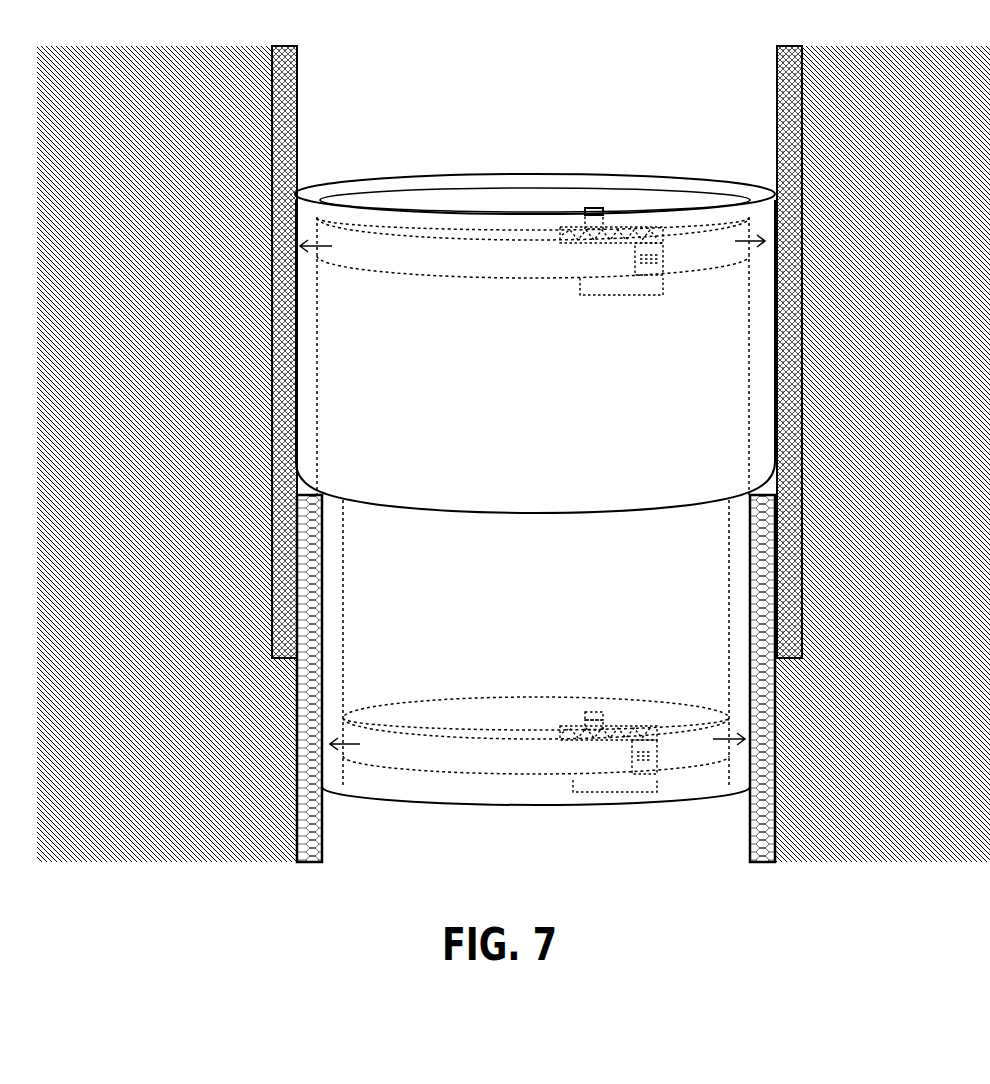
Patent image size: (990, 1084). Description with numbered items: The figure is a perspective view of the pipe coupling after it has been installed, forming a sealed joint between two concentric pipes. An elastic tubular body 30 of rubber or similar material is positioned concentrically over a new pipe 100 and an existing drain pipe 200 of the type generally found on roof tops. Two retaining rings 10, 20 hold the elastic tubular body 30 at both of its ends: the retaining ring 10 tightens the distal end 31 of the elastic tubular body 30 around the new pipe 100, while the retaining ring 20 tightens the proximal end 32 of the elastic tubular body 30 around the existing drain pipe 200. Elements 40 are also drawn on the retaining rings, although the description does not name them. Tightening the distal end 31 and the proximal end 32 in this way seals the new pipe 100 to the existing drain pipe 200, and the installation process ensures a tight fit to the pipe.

The retaining ring 10 is at (472, 210).
The retaining ring 20 is at (497, 718).
The elastic tubular body 30 is at (760, 407).
The distal end 31 is at (647, 177).
The proximal end 32 is at (473, 807).
The locking mechanism 40 is at (623, 285).
The new pipe 100 is at (776, 91).
The existing drain pipe 200 is at (762, 852).